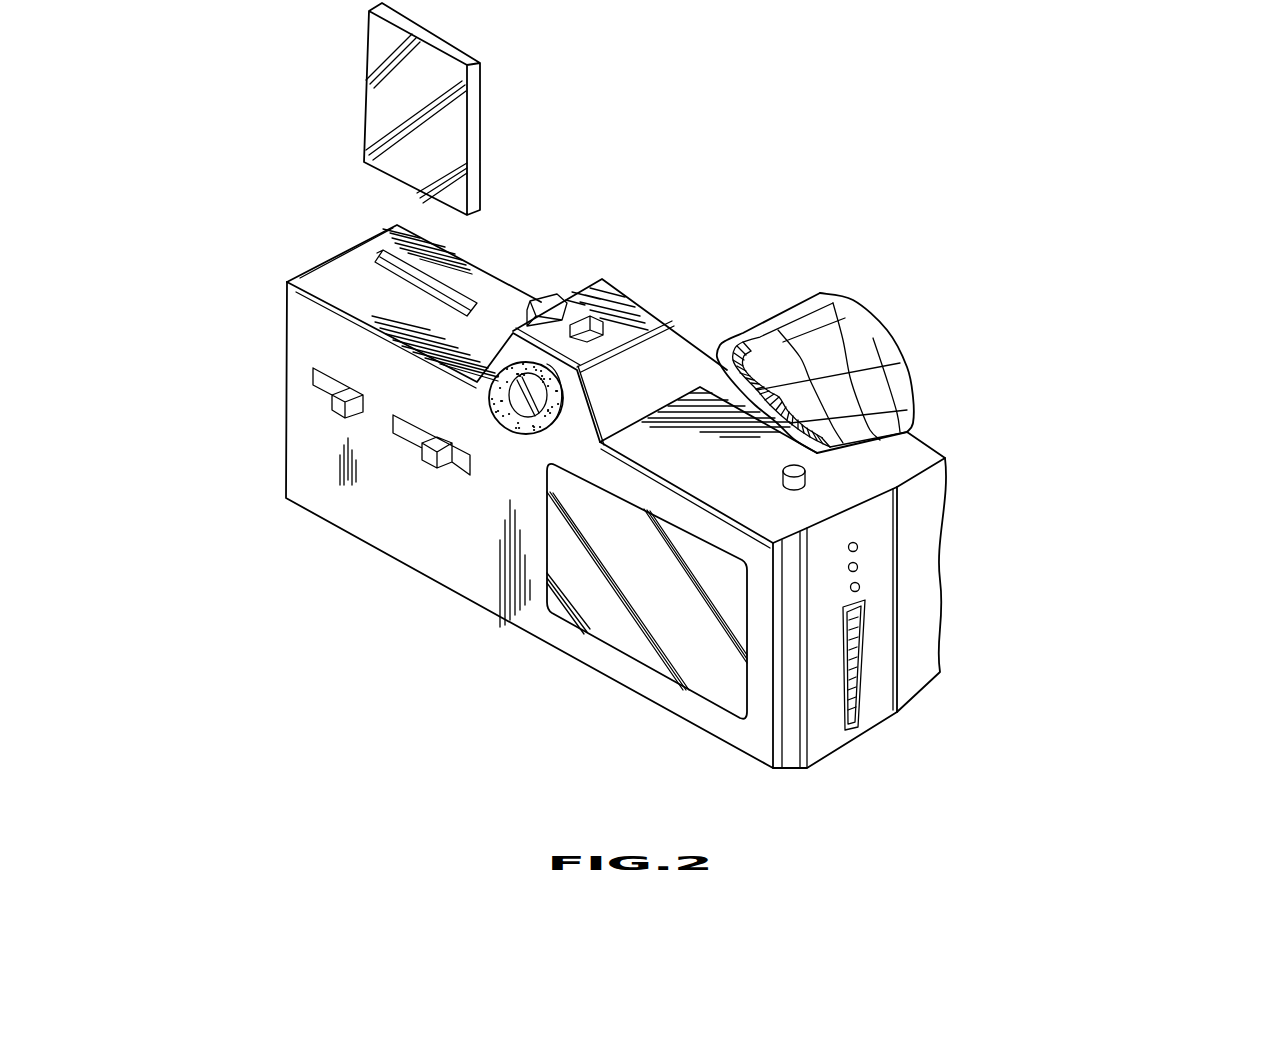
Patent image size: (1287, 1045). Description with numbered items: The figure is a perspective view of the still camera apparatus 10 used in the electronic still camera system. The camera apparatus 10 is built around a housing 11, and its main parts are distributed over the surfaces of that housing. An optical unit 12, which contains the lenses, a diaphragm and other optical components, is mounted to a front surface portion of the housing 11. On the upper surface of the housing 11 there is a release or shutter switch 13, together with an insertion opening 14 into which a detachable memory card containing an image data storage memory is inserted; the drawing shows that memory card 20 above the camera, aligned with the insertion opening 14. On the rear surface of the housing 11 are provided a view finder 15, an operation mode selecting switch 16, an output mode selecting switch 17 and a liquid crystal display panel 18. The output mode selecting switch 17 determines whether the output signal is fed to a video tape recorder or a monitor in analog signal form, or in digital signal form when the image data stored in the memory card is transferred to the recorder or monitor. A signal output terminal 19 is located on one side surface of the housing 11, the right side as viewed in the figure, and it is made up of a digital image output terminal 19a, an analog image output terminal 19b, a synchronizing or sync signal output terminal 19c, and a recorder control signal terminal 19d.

The camera apparatus 10 is at (949, 278).
The housing 11 is at (493, 597).
The optical unit 12 is at (850, 352).
The release switch 13 is at (806, 480).
The insertion opening 14 is at (383, 258).
The view finder 15 is at (604, 340).
The operation mode selecting switch 16 is at (427, 465).
The output mode selecting switch 17 is at (332, 412).
The liquid crystal display panel 18 is at (637, 648).
The signal output terminal 19 is at (1055, 617).
The digital image output terminal 19a is at (925, 658).
The analog image output terminal 19b is at (860, 585).
The sync signal output terminal 19c is at (858, 565).
The recorder control signal terminal 19d is at (858, 546).
The memory card 20 is at (480, 93).